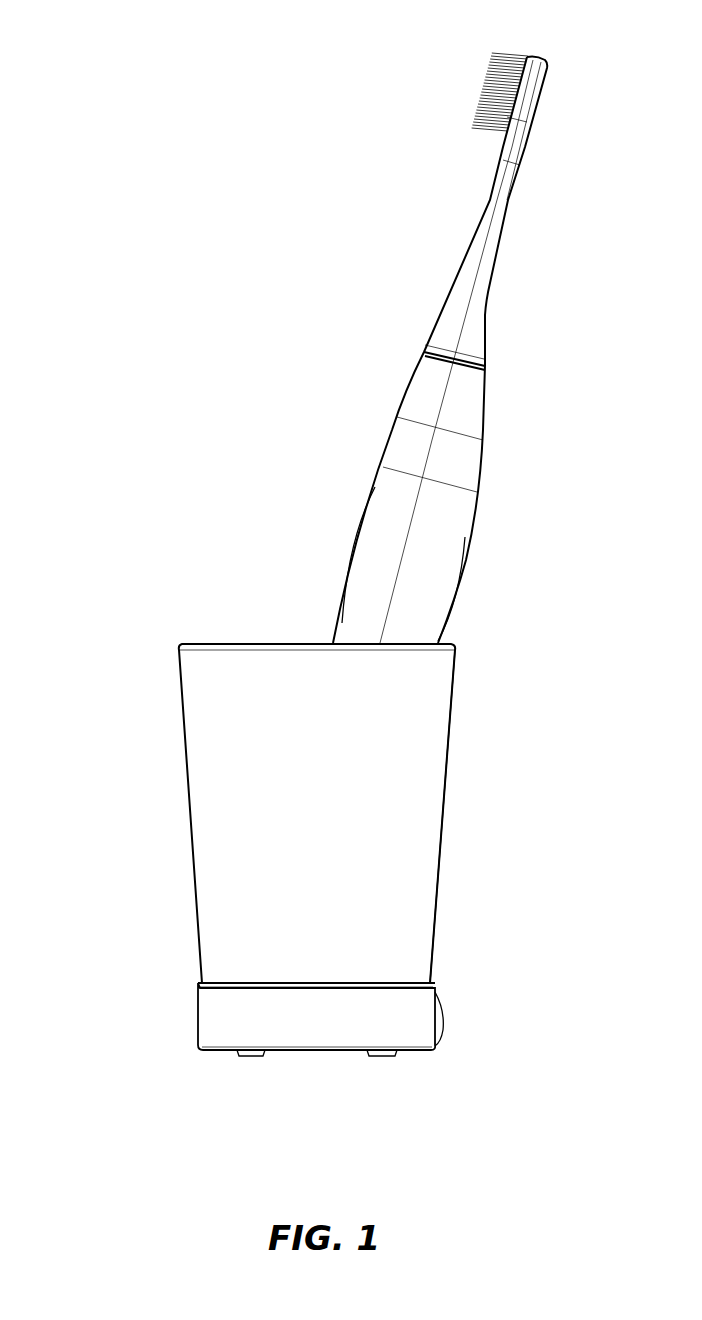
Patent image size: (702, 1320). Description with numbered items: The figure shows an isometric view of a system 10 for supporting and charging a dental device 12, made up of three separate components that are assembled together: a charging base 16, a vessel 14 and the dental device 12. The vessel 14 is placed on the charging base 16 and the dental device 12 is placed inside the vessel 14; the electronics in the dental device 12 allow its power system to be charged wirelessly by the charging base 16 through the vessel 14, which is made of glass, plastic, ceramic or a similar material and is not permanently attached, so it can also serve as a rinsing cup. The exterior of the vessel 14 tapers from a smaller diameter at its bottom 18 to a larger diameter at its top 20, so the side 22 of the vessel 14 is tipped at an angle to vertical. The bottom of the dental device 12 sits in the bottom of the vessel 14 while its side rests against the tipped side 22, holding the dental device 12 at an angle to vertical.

The system for supporting and charging a dental device 10 is at (163, 414).
The dental device 12 is at (470, 408).
The vessel 14 is at (208, 791).
The charging base 16 is at (217, 1026).
The bottom of the vessel 18 is at (200, 984).
The top of the vessel 20 is at (178, 645).
The side of the vessel 22 is at (444, 823).